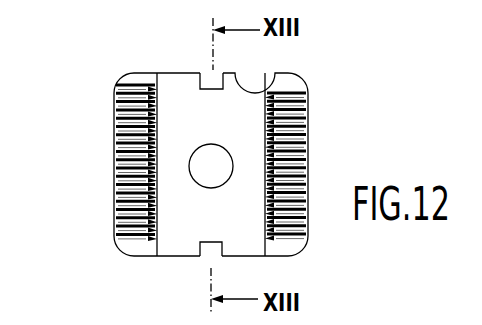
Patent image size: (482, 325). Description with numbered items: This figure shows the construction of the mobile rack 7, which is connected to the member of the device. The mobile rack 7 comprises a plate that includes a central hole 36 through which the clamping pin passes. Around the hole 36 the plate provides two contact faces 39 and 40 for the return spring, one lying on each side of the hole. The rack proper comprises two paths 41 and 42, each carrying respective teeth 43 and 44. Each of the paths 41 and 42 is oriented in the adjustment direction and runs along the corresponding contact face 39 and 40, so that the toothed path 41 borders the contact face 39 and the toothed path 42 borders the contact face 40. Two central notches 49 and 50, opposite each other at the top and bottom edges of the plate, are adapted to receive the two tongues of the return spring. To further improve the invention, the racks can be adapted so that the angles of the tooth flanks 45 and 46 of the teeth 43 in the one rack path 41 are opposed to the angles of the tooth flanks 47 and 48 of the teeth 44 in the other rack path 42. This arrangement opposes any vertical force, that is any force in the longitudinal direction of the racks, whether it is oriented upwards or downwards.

The mobile rack 7 is at (106, 79).
The hole 36 is at (194, 182).
The contact face 39 is at (180, 125).
The contact face 40 is at (253, 130).
The rack path 41 is at (105, 205).
The rack path 42 is at (311, 210).
The teeth 43 is at (115, 222).
The teeth 44 is at (288, 215).
The tooth flank 45 is at (118, 148).
The tooth flank 46 is at (130, 175).
The tooth flank 47 is at (298, 140).
The tooth flank 48 is at (300, 148).
The central notch 49 is at (208, 76).
The central notch 50 is at (205, 258).